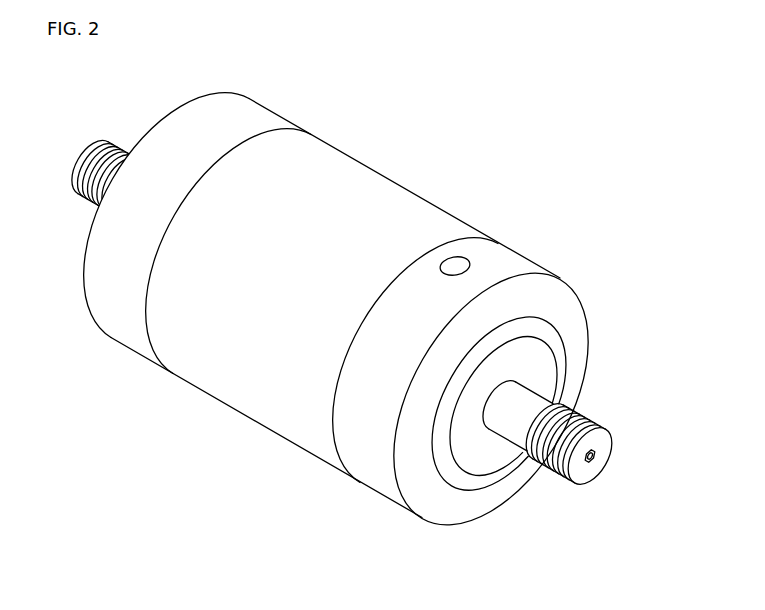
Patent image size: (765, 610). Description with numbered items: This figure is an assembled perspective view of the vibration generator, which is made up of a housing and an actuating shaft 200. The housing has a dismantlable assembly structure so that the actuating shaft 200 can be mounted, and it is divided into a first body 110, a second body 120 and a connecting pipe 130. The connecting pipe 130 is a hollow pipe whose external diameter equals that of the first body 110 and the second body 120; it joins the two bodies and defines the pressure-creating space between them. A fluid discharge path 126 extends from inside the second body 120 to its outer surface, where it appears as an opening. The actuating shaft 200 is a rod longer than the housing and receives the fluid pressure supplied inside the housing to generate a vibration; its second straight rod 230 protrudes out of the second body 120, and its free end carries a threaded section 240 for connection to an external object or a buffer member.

The first body 110 is at (282, 101).
The second body 120 is at (513, 267).
The fluid discharge path 126 is at (463, 256).
The connecting pipe 130 is at (358, 185).
The actuating shaft 200 is at (491, 441).
The second straight rod 230 is at (528, 395).
The threaded section 240 is at (562, 473).